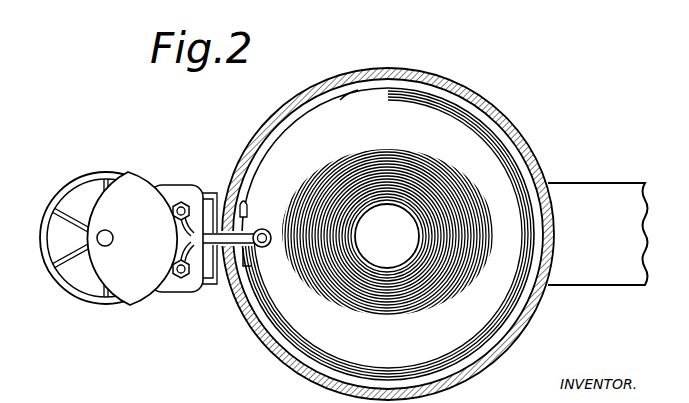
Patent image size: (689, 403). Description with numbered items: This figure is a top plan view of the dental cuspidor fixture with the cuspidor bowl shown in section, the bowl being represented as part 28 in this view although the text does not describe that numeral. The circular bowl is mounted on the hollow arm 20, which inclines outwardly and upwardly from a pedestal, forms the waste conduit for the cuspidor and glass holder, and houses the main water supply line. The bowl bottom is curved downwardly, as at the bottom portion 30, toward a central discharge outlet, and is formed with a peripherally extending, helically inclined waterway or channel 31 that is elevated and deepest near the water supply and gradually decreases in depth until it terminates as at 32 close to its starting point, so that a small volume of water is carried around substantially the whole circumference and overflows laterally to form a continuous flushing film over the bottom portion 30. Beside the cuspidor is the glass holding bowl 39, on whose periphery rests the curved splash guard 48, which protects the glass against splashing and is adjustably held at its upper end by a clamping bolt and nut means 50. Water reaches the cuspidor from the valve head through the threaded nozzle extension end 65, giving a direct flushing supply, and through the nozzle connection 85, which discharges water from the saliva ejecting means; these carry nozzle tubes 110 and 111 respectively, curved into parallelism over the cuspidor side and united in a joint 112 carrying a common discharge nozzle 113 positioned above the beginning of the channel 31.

The hollow arm 20 is at (608, 194).
The casing wall 28 is at (457, 93).
The curving bottom portion 30 is at (357, 287).
The waterway or channel 31 is at (236, 179).
The channel terminus 32 is at (324, 88).
The glass holding bowl 39 is at (64, 286).
The splash guard 48 is at (132, 238).
The clamping bolt and nut means 50 is at (108, 231).
The threaded end of nozzle extension 65 is at (180, 280).
The nozzle connection 85 is at (178, 201).
The nozzle tube 110 is at (213, 274).
The nozzle tube 111 is at (189, 234).
The joint 112 is at (266, 228).
The common discharge nozzle 113 is at (258, 255).